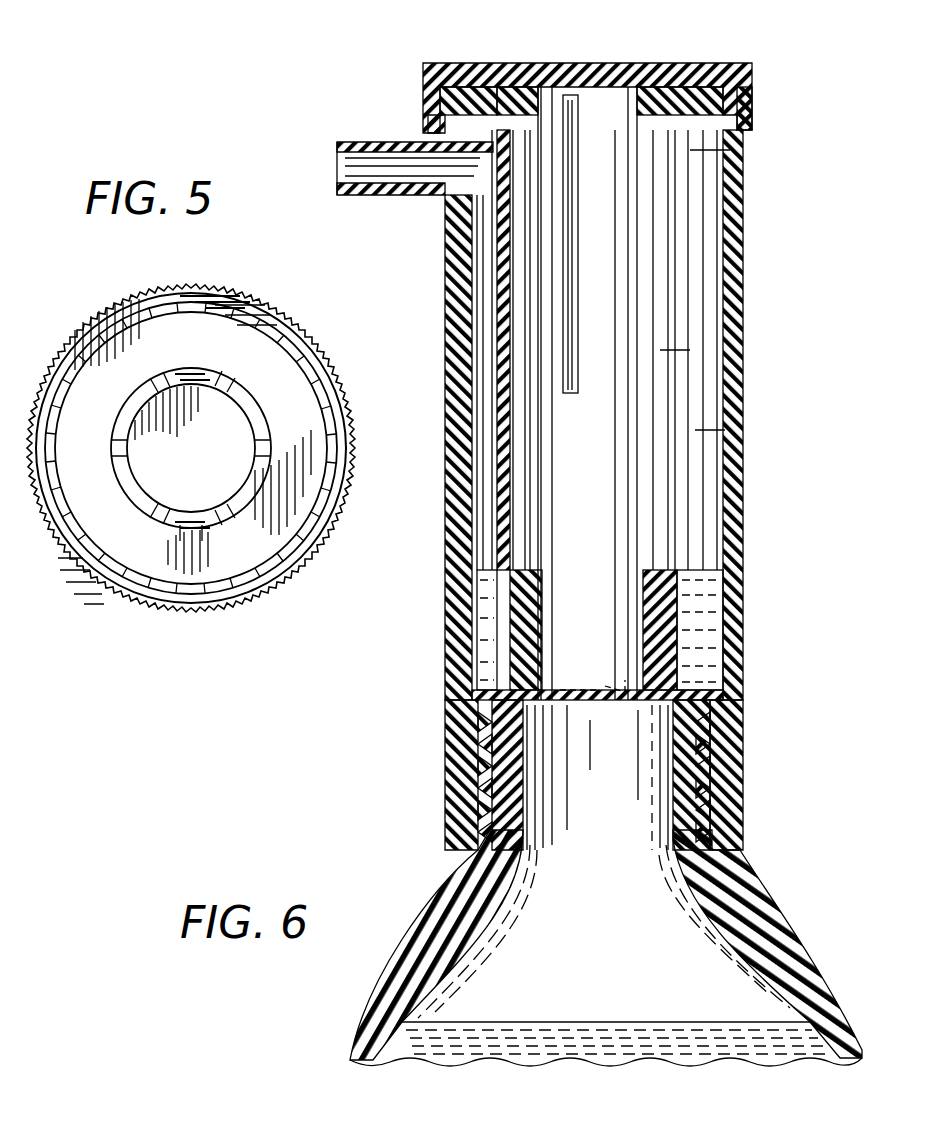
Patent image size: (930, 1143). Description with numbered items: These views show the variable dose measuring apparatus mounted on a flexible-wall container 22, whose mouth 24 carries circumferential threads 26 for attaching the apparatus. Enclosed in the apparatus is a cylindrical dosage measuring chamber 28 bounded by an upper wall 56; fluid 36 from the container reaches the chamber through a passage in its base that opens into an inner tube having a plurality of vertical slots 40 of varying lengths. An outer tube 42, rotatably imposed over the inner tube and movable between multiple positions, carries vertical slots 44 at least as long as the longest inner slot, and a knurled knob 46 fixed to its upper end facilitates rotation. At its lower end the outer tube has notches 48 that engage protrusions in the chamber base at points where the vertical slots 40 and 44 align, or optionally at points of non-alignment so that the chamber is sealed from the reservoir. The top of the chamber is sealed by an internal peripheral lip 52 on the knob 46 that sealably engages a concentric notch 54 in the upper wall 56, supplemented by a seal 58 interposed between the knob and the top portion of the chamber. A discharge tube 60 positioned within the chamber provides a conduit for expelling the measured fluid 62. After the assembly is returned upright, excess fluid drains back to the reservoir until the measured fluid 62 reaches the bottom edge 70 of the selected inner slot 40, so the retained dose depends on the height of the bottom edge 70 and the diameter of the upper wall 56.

In FIG. 6, the flexible-wall container 22 is at (798, 950).
In FIG. 6, the mouth 24 is at (655, 740).
In FIG. 6, the threads 26 is at (722, 830).
In FIG. 5, the dosage measuring chamber 28 is at (192, 590).
In FIG. 6, the dosage measuring chamber 28 is at (695, 148).
In FIG. 6, the fluid 36 is at (765, 1035).
In FIG. 6, the vertical slots 40 is at (585, 128).
In FIG. 5, the outer tube 42 is at (130, 395).
In FIG. 6, the vertical slots 44 is at (668, 210).
In FIG. 5, the knurled knob 46 is at (105, 312).
In FIG. 6, the knurled knob 46 is at (468, 88).
In FIG. 5, the notches 48 is at (232, 520).
In FIG. 6, the notches 48 is at (632, 690).
In FIG. 5, the internal peripheral lip 52 is at (118, 578).
In FIG. 6, the internal peripheral lip 52 is at (428, 124).
In FIG. 6, the concentric notch 54 is at (445, 110).
In FIG. 6, the upper wall 56 is at (745, 320).
In FIG. 6, the seal 58 is at (697, 78).
In FIG. 6, the discharge tube 60 is at (400, 190).
In FIG. 6, the measured fluid 62 is at (705, 512).
In FIG. 6, the bottom edge 70 is at (668, 578).